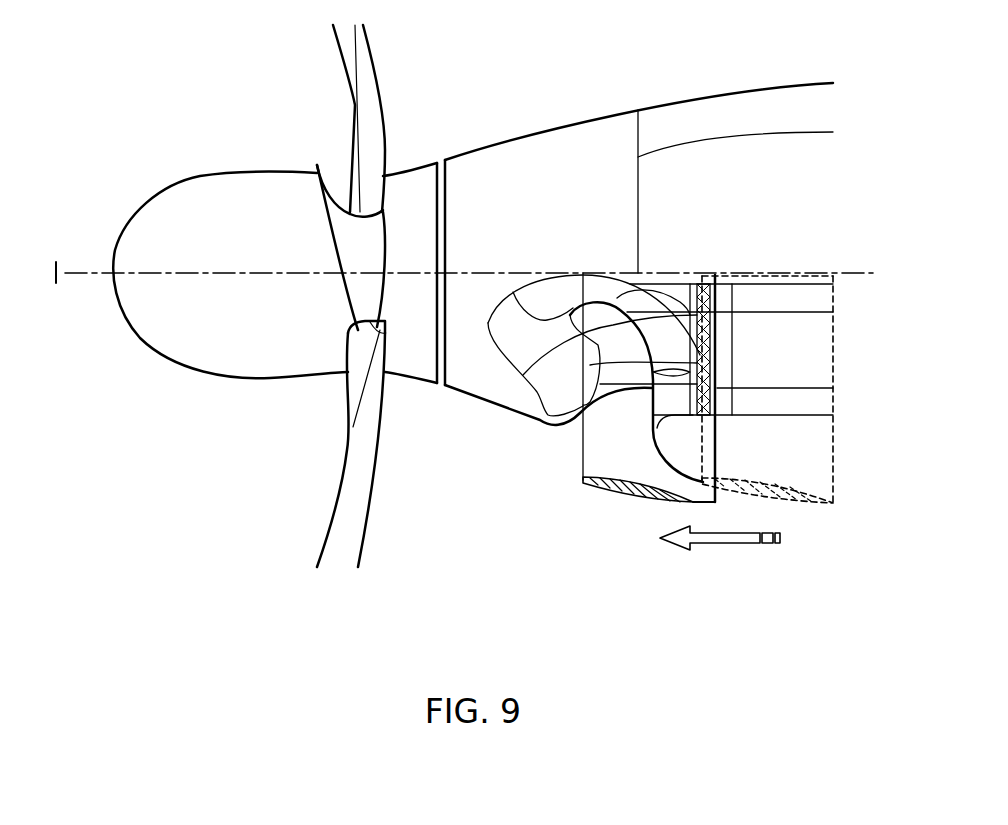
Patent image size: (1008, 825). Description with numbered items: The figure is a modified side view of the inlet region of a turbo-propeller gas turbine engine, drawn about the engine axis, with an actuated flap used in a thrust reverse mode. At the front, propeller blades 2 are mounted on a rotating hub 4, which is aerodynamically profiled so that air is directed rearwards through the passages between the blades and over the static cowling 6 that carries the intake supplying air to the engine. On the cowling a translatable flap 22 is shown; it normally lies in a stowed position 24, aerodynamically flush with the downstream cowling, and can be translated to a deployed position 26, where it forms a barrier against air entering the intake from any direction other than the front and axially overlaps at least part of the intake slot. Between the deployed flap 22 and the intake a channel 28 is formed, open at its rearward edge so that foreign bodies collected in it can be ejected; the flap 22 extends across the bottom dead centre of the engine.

The propeller blades 2 is at (365, 107).
The rotating hub 4 is at (208, 358).
The static cowling 6 is at (493, 403).
The translatable flap 22 is at (603, 495).
The stowed position 24 is at (810, 518).
The deployed position 26 is at (632, 527).
The channel 28 is at (636, 402).